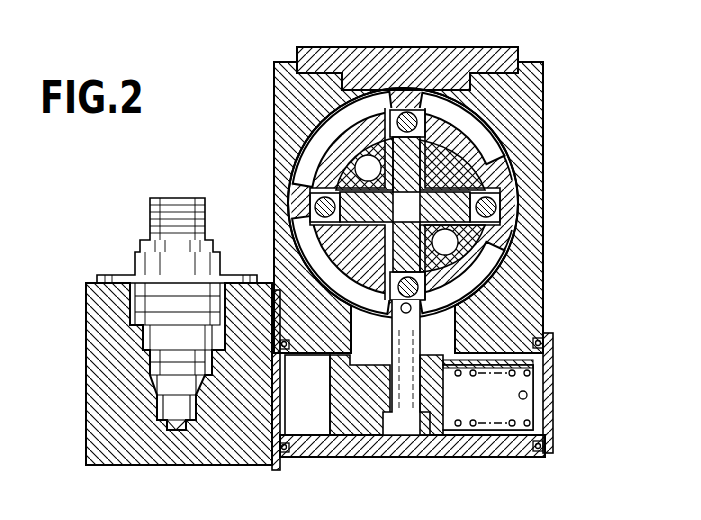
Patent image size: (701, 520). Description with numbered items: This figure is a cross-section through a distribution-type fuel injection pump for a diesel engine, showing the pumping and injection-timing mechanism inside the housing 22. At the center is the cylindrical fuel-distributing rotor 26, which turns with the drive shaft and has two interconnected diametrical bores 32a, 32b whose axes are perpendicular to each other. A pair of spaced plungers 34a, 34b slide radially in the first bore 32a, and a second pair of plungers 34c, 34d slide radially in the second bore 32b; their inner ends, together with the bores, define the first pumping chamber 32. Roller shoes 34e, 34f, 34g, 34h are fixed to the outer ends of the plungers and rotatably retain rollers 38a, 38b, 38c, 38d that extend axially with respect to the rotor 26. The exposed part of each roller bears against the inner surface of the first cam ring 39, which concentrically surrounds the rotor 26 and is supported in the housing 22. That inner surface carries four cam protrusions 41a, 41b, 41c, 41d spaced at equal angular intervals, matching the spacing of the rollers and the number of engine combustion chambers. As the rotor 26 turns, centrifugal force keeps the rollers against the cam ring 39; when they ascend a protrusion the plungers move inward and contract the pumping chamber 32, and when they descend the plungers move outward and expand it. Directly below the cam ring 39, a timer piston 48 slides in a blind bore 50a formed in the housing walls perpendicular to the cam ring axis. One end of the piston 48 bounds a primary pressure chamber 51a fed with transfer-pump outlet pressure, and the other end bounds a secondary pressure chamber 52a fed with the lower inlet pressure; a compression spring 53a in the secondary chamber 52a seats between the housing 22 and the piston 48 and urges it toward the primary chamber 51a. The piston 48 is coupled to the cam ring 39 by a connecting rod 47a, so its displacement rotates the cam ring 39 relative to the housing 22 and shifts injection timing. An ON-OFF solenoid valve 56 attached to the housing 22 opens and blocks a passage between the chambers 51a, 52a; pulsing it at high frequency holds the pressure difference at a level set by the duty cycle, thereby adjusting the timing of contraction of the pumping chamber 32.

The housing 22 is at (540, 72).
The fuel-distributing rotor 26 is at (518, 168).
The first pumping chamber 32 is at (315, 228).
The first diametrical bore 32a is at (506, 183).
The second diametrical bore 32b is at (470, 268).
The plunger 34a is at (515, 150).
The plunger 34b is at (470, 290).
The plunger 34c is at (472, 240).
The plunger 34d is at (315, 165).
The roller shoe 34e is at (433, 125).
The roller shoe 34f is at (476, 395).
The roller shoe 34g is at (480, 228).
The roller shoe 34h is at (342, 196).
The roller 38a is at (407, 110).
The roller 38b is at (397, 300).
The roller 38c is at (500, 207).
The roller 38d is at (315, 206).
The first cam ring 39 is at (378, 97).
The cam protrusion 41a is at (523, 115).
The cam protrusion 41b is at (318, 250).
The cam protrusion 41c is at (497, 262).
The cam protrusion 41d is at (300, 148).
The connecting rod 47a is at (430, 445).
The timer piston 48 is at (405, 420).
The blind bore 50a is at (348, 440).
The primary pressure chamber 51a is at (286, 448).
The secondary pressure chamber 52a is at (545, 408).
The compression spring 53a is at (530, 366).
The solenoid valve 56 is at (155, 308).